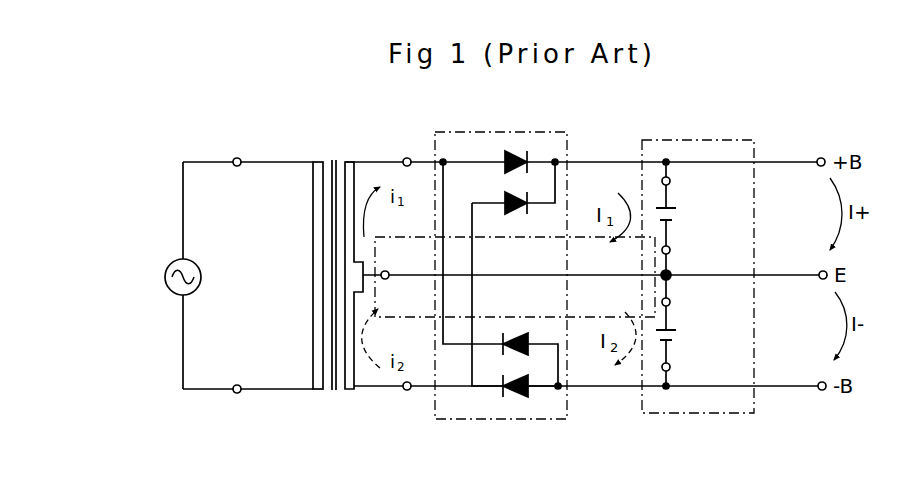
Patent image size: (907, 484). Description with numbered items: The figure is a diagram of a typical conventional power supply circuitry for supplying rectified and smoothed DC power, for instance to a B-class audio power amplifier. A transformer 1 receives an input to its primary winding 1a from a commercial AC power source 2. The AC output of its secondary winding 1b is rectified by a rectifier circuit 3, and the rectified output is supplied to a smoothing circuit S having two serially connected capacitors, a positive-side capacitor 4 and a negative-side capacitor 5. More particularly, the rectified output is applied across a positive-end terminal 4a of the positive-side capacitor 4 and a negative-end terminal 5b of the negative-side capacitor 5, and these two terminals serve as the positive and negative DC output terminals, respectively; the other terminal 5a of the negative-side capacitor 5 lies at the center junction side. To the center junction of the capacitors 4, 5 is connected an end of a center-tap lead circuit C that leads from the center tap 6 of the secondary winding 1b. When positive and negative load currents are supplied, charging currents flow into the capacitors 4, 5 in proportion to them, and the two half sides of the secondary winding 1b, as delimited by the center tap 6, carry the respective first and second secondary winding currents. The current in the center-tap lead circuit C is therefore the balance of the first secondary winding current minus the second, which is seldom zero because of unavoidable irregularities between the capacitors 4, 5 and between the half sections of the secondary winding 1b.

The transformer 1 is at (331, 394).
The primary winding 1a is at (313, 265).
The secondary winding 1b is at (343, 180).
The commercial AC power source 2 is at (165, 288).
The rectifier circuit 3 is at (548, 132).
The positive-side capacitor 4 is at (676, 212).
The positive-end terminal 4a is at (670, 181).
The negative-side capacitor 5 is at (680, 332).
The terminal of second battery 5a is at (671, 302).
The negative-end terminal 5b is at (671, 367).
The center tap 6 is at (389, 274).
The center-tap lead circuit C is at (402, 237).
The smoothing circuit S is at (712, 140).